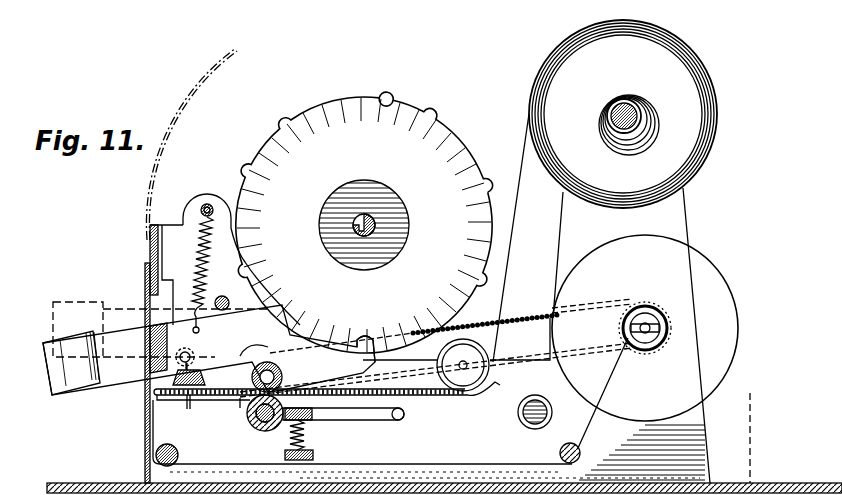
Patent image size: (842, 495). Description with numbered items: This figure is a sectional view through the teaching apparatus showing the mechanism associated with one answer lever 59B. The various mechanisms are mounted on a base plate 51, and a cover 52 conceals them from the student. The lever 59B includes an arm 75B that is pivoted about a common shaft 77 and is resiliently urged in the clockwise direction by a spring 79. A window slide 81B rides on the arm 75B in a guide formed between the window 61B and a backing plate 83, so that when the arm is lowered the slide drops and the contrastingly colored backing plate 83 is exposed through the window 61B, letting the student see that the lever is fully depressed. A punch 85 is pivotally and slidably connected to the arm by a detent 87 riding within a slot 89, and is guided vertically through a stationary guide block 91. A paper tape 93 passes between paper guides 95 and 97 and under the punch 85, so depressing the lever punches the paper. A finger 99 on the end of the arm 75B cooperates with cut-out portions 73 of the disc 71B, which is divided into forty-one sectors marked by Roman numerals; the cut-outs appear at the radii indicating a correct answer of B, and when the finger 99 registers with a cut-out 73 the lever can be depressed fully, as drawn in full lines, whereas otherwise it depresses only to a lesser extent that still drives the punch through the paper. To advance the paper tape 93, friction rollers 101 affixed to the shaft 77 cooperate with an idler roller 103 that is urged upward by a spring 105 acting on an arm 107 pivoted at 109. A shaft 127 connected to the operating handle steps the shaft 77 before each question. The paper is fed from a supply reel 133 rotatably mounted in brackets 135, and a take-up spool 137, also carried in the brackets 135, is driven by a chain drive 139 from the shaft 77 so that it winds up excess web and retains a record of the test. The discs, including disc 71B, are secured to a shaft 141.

The base plate 51 is at (80, 484).
The cover 52 is at (752, 430).
The answer lever 59B is at (80, 398).
The window 61B is at (145, 252).
The disc 71B is at (305, 100).
The cut-out portions 73 is at (392, 100).
The arm 75B is at (126, 392).
The common shaft 77 is at (253, 366).
The spring 79 is at (202, 252).
The window slide 81B is at (160, 300).
The backing plate 83 is at (170, 227).
The punch 85 is at (190, 406).
The detent 87 is at (192, 354).
The slot 89 is at (193, 350).
The guide block 91 is at (208, 375).
The paper guide 95 is at (200, 377).
The paper tape 93 is at (521, 170).
The paper guide 97 is at (242, 405).
The finger 99 is at (372, 356).
The friction roller 101 is at (283, 377).
The idler roller 103 is at (264, 432).
The spring 105 is at (306, 432).
The arm 107 is at (349, 421).
The pivot 109 is at (404, 416).
The shaft 127 is at (546, 417).
The supply reel 133 is at (699, 63).
The brackets 135 is at (690, 226).
The take-up spool 137 is at (650, 316).
The chain drive 139 is at (507, 332).
The shaft 141 is at (364, 225).